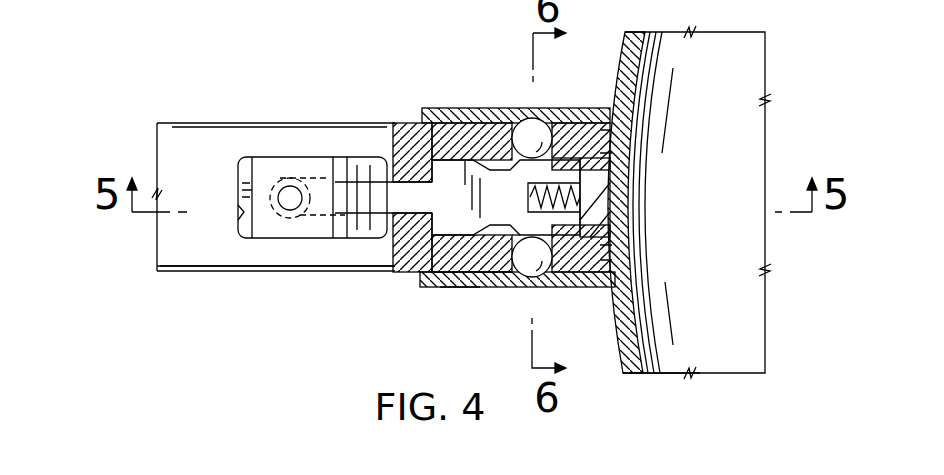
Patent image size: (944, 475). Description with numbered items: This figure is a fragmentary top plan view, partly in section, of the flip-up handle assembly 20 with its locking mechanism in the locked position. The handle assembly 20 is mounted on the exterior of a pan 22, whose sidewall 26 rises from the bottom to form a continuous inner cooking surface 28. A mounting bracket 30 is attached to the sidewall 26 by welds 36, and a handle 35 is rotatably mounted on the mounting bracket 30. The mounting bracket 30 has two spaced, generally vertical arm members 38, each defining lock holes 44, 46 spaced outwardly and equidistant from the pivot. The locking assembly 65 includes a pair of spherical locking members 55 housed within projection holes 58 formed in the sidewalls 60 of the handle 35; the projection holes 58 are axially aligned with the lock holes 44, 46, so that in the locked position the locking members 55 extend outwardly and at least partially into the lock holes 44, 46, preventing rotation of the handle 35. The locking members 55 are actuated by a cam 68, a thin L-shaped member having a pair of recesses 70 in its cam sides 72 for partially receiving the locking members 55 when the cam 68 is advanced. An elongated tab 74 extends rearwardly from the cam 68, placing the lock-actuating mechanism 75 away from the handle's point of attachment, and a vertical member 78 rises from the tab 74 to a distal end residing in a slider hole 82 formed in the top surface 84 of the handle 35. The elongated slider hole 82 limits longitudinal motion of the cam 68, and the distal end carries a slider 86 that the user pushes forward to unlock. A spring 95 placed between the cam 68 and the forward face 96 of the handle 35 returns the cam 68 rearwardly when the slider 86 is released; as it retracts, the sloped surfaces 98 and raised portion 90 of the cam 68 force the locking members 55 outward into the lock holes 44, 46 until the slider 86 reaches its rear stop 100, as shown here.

The handle assembly 20 is at (235, 72).
The pan 22 is at (663, 382).
The sidewall 26 is at (625, 357).
The inner cooking surface 28 is at (750, 318).
The mounting bracket 30 is at (427, 95).
The handle 35 is at (171, 278).
The welds 36 is at (610, 107).
The arm members 38 is at (500, 107).
The lock hole 44 is at (540, 107).
The lock hole 46 is at (458, 292).
The locking member 55 is at (600, 130).
The projection hole 58 is at (600, 153).
The sidewall 60 is at (575, 107).
The locking assembly 65 is at (417, 143).
The cam 68 is at (393, 270).
The recess 70 is at (493, 227).
The cam side 72 is at (435, 292).
The tab 74 is at (410, 188).
The lock-actuating mechanism 75 is at (295, 240).
The vertical member 78 is at (290, 176).
The slider hole 82 is at (322, 217).
The top surface 84 is at (230, 198).
The slider 86 is at (275, 232).
The raised portion 90 is at (612, 169).
The spring 95 is at (600, 193).
The forward face 96 is at (605, 203).
The sloped surface 98 is at (466, 284).
The rear stop 100 is at (243, 228).